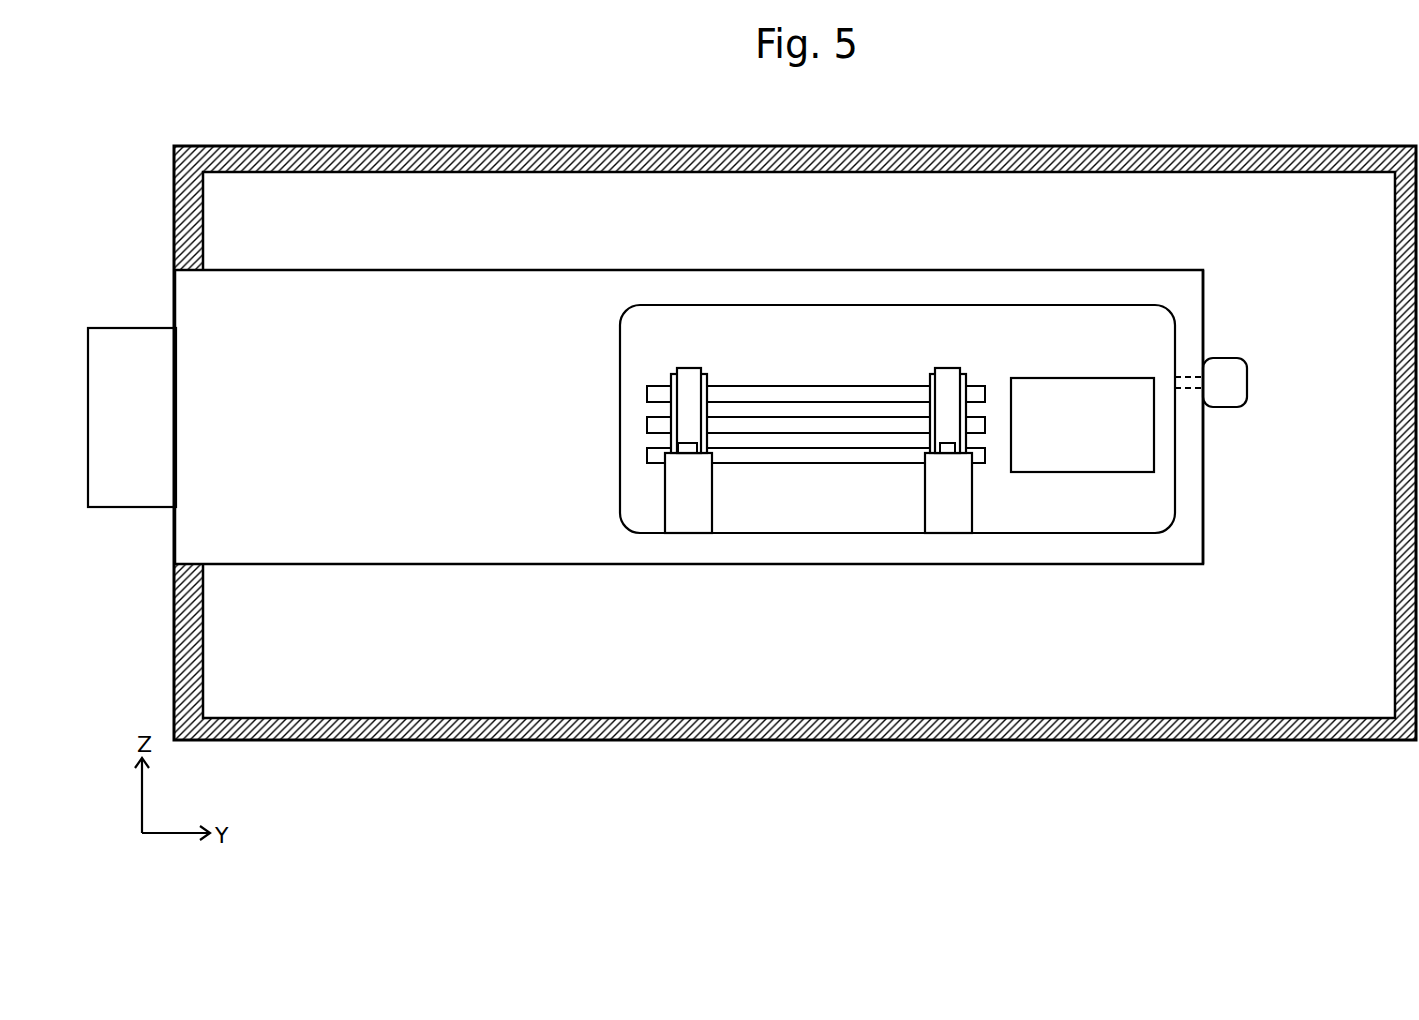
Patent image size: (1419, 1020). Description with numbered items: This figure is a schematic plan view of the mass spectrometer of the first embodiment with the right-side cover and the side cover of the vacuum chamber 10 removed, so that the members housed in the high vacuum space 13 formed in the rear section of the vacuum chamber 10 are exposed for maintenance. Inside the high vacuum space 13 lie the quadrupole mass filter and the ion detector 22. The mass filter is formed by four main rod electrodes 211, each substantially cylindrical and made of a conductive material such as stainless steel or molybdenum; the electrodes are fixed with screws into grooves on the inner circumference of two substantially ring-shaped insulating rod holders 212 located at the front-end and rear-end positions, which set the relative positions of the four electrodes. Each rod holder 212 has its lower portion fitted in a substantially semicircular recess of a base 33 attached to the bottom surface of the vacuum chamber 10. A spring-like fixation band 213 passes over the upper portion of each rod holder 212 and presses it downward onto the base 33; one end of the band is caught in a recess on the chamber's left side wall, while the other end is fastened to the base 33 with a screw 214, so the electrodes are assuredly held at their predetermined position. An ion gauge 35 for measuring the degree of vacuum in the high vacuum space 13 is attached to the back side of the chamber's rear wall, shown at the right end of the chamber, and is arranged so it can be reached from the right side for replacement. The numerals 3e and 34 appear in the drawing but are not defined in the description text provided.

The vacuum chamber 10 is at (617, 270).
The end face of casing 3e is at (1201, 290).
The high vacuum space 13 is at (1105, 509).
The main rod electrode 211 is at (875, 448).
The rod holder 212 is at (707, 375).
The fixation band 213 is at (687, 374).
The screw 214 is at (688, 450).
The base 33 is at (932, 511).
The support block 34 is at (948, 452).
The ion detector 22 is at (1108, 380).
The ion gauge 35 is at (1247, 363).